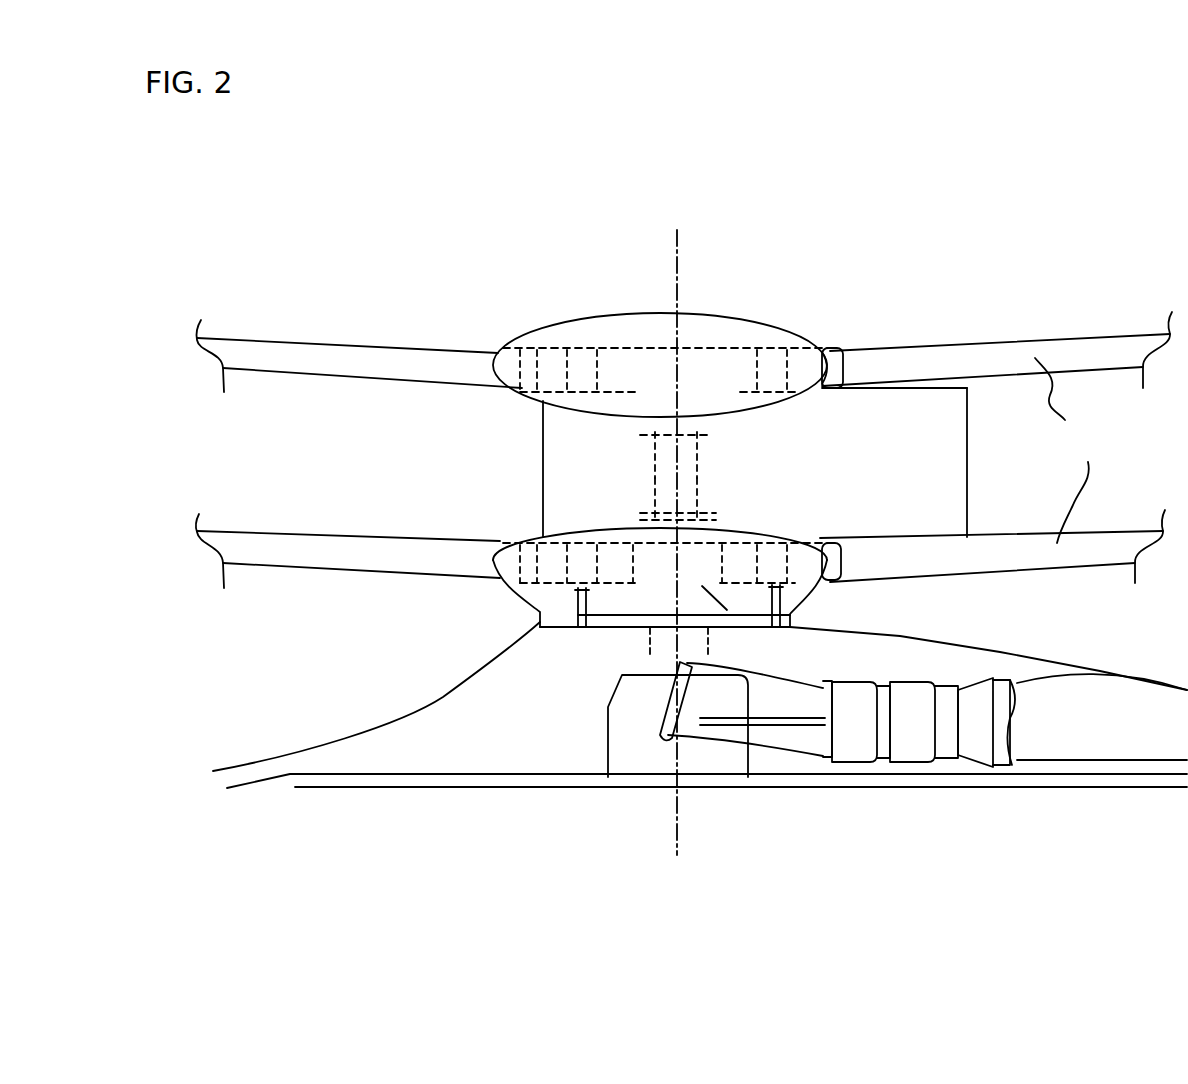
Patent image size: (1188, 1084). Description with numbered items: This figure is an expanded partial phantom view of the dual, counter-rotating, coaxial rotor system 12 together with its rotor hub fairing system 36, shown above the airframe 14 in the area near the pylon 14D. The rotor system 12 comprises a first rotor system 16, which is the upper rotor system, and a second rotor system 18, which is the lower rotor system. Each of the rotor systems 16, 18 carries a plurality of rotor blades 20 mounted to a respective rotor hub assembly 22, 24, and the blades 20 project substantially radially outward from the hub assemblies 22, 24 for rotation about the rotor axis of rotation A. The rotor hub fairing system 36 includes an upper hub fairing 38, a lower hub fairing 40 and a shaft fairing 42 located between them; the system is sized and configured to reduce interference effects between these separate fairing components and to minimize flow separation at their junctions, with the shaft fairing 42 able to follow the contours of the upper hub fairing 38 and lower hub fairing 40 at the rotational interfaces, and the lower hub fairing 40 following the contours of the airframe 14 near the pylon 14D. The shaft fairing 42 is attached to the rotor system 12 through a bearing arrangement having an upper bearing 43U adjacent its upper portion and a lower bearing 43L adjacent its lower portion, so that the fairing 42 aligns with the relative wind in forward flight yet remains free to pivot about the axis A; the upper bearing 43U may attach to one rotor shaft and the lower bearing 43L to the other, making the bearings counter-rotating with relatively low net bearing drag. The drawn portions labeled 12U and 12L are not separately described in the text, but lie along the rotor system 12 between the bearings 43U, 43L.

The rotor axis of rotation A is at (679, 243).
The counter-rotating coaxial rotor system 12 is at (488, 618).
The upper mast portion 12U is at (668, 467).
The lower mast portion 12L is at (640, 533).
The airframe 14 is at (318, 853).
The pylon 14D is at (513, 686).
The first rotor system 16 is at (898, 330).
The second rotor system 18 is at (978, 516).
The rotor blades 20 is at (1063, 450).
The rotor hub assembly 22 is at (703, 366).
The rotor hub assembly 24 is at (712, 590).
The rotor hub fairing system 36 is at (896, 252).
The upper hub fairing 38 is at (595, 332).
The lower hub fairing 40 is at (543, 535).
The shaft fairing 42 is at (900, 461).
The upper bearing 43U is at (704, 433).
The lower bearing 43L is at (704, 519).